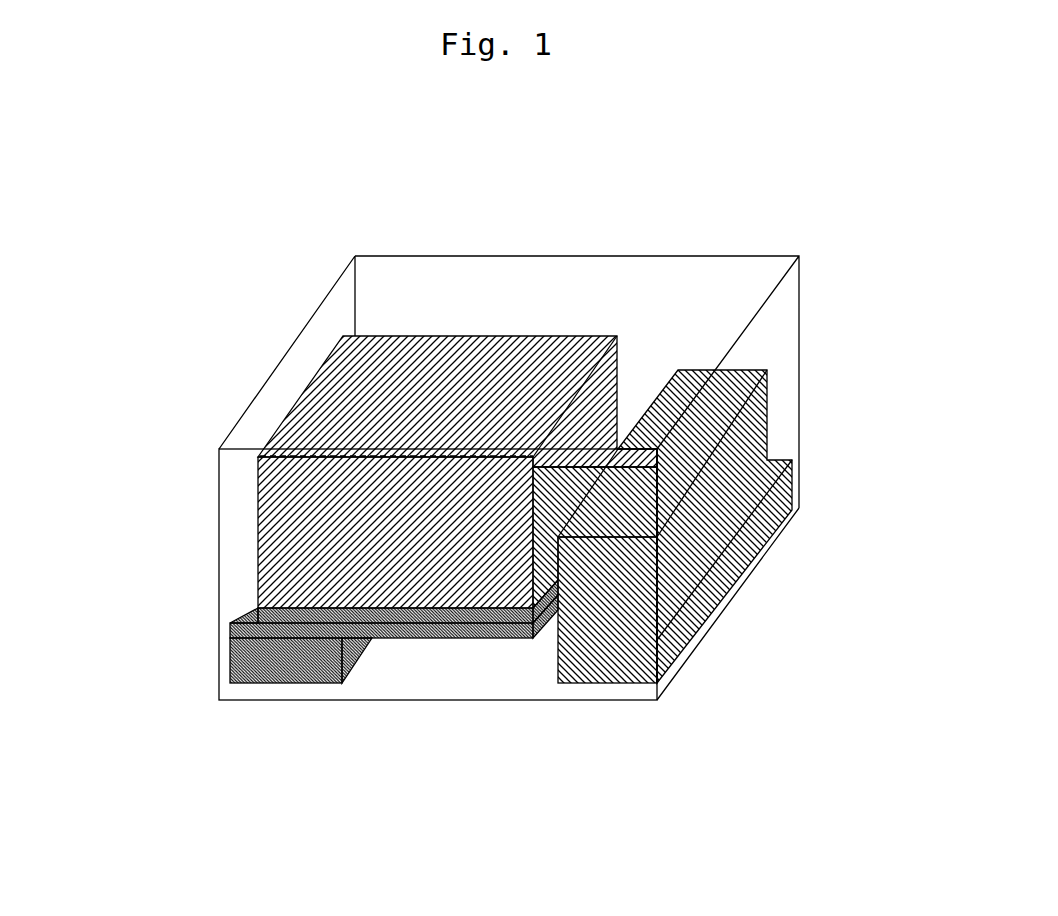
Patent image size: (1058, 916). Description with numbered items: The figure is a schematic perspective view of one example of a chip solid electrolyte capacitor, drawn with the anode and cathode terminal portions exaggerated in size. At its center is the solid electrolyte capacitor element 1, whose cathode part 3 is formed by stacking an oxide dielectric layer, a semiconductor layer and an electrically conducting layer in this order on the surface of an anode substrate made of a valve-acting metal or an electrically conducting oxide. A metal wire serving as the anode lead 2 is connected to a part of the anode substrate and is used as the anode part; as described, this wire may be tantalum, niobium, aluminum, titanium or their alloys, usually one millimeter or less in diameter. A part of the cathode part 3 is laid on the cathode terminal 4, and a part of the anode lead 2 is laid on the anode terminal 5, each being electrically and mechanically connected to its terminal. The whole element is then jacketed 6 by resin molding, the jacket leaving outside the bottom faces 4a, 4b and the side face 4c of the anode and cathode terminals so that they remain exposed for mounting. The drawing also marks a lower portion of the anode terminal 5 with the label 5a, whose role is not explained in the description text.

The solid electrolyte capacitor element 1 is at (315, 490).
The anode lead 2 is at (619, 447).
The cathode part 3 is at (445, 627).
The cathode terminal 4 is at (313, 640).
The bottom face of cathode terminal 4a is at (302, 683).
The bottom face of terminal 4b is at (247, 598).
The side face of terminal 4c is at (230, 640).
The anode terminal 5 is at (694, 593).
The bottom surface of second lead terminal 5a is at (617, 683).
The jacket 6 is at (768, 347).